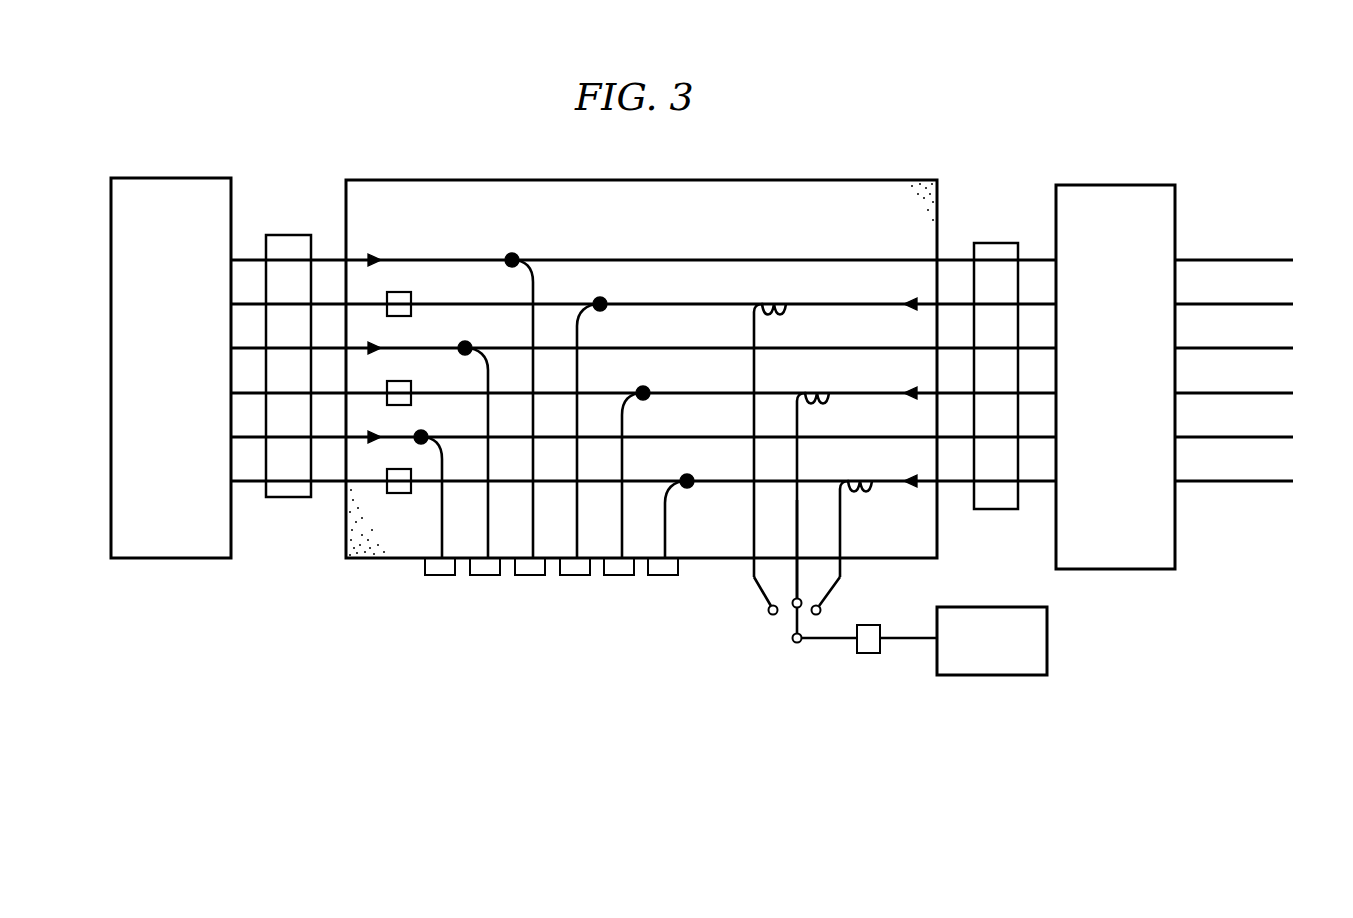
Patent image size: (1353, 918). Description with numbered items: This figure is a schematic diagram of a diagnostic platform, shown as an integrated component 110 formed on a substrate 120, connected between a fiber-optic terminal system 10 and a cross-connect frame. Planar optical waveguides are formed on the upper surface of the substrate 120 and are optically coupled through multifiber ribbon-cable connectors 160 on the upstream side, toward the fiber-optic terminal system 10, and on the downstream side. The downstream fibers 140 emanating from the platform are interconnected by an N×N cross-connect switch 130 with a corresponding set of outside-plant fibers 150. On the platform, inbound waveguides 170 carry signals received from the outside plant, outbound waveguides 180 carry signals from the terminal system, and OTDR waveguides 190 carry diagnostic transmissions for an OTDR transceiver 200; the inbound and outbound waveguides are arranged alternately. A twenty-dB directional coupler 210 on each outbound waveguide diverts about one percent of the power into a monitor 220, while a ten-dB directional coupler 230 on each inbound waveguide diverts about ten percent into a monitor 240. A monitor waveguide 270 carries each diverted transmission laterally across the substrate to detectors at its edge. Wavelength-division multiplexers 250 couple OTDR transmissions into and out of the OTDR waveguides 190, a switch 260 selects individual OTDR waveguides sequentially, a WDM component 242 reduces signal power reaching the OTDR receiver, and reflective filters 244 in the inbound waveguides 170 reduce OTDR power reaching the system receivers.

The fiber-optic terminal system (FOTS) 10 is at (174, 178).
The integrated component (diagnostic platform) 110 is at (365, 529).
The substrate 120 is at (647, 180).
The N×N cross-connect switch 130 is at (1118, 185).
The fibers 140 is at (1000, 262).
The outside-plant fibers 150 is at (1260, 262).
The multifiber ribbon-cable connectors 160 is at (291, 246).
The inbound waveguides 170 is at (700, 304).
The outbound waveguides 180 is at (622, 260).
The OTDR waveguides 190 is at (798, 528).
The OTDR transceiver 200 is at (992, 607).
The 20-dB directional coupler 210 is at (515, 258).
The monitor 220 is at (532, 576).
The 10-dB directional coupler 230 is at (609, 304).
The monitor 240 is at (574, 576).
The WDM component 242 is at (867, 656).
The reflective filters 244 is at (414, 302).
The wavelength-division multiplexers (WDMs) 250 is at (786, 304).
The switch 260 is at (796, 650).
The monitor waveguide 270 is at (440, 537).